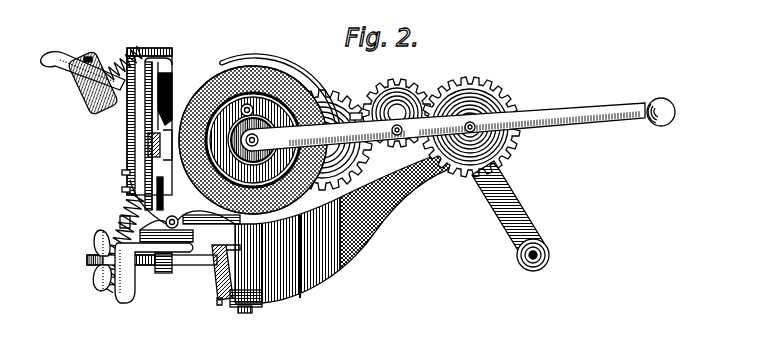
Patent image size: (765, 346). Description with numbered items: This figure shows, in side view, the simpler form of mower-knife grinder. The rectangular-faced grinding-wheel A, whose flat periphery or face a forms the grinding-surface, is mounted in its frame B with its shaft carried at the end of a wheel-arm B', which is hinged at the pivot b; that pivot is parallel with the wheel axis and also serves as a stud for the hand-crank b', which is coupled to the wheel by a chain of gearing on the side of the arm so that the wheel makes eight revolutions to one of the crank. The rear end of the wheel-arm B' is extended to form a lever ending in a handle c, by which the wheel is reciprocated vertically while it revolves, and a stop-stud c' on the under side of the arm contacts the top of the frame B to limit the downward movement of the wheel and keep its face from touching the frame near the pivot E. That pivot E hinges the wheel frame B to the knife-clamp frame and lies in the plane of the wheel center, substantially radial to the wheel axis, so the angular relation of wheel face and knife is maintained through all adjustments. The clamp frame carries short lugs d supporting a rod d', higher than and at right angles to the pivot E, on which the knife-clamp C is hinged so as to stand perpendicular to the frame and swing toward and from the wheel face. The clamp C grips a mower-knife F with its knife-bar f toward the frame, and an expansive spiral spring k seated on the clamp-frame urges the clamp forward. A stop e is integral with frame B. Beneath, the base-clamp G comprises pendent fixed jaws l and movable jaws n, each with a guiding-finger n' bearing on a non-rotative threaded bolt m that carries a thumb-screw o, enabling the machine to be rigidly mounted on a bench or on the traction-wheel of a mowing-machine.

The grinding-wheel A is at (253, 137).
The grinding-wheel frame B is at (340, 220).
The wheel-arm B' is at (443, 127).
The knife-clamp C is at (147, 125).
The pivot E is at (246, 310).
The mower-knife F is at (165, 77).
The base-clamp G is at (216, 272).
The face a is at (168, 145).
The pivot b is at (477, 127).
The hand-crank b' is at (510, 216).
The handle c is at (659, 105).
The stop-stud c' is at (384, 134).
The lugs d is at (166, 228).
The rod d' is at (106, 222).
The stop e is at (203, 224).
The knife-bar f is at (147, 148).
The spiral spring k is at (120, 242).
The fixed jaws l is at (217, 299).
The threaded bolt m is at (139, 262).
The movable jaws n is at (154, 279).
The guiding-finger n' is at (164, 273).
The thumb-screw o is at (98, 263).